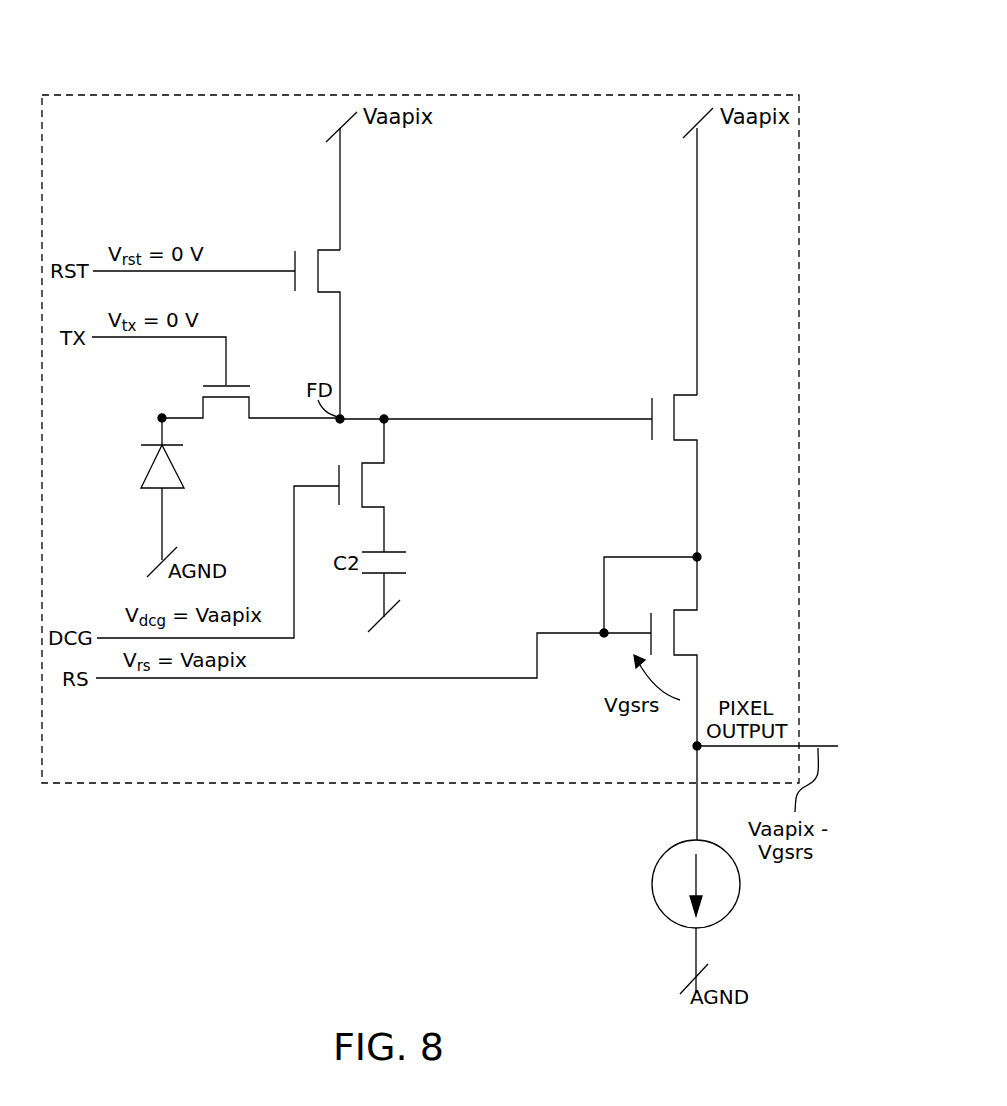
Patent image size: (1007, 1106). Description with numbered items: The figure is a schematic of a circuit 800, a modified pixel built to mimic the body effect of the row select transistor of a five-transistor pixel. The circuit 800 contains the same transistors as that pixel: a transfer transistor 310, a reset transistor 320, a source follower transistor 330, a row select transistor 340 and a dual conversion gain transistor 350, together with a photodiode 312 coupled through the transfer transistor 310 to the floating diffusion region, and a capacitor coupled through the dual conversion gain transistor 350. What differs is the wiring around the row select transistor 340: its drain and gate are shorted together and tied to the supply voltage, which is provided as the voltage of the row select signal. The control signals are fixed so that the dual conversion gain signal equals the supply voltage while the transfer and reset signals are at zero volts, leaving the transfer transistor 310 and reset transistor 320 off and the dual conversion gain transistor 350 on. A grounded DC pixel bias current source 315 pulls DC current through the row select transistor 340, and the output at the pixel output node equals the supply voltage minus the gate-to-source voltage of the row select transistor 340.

The circuit 800 is at (127, 83).
The transfer transistor 310 is at (246, 420).
The photodiode 312 is at (176, 470).
The DC pixel bias current source 315 is at (672, 923).
The reset transistor 320 is at (334, 291).
The source follower transistor 330 is at (690, 440).
The row select transistor 340 is at (690, 655).
The dual conversion gain transistor 350 is at (378, 507).